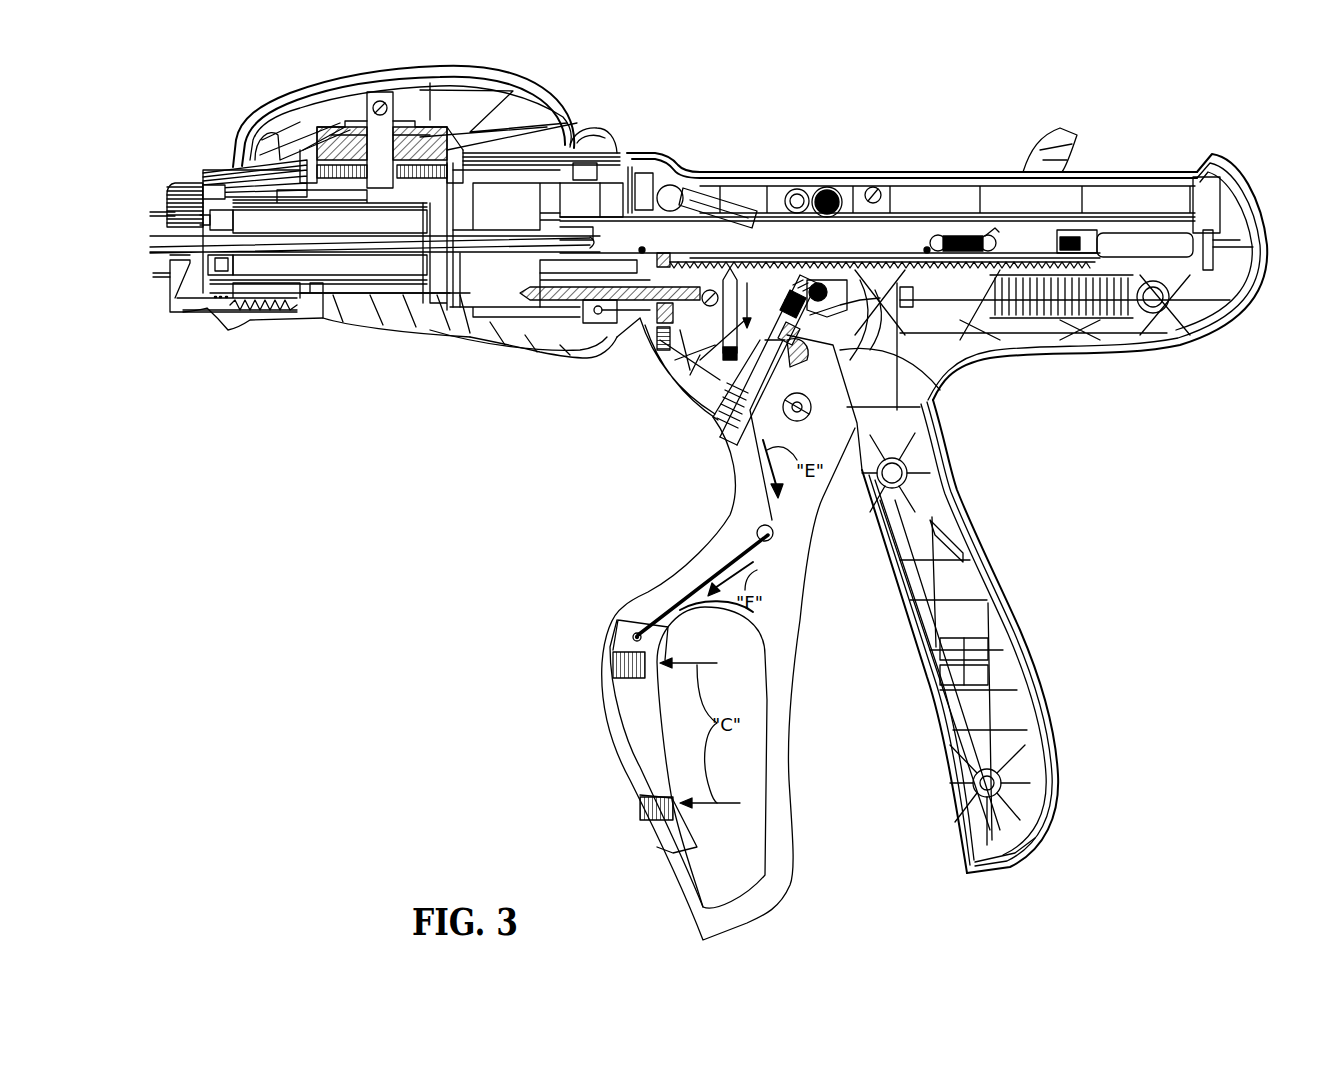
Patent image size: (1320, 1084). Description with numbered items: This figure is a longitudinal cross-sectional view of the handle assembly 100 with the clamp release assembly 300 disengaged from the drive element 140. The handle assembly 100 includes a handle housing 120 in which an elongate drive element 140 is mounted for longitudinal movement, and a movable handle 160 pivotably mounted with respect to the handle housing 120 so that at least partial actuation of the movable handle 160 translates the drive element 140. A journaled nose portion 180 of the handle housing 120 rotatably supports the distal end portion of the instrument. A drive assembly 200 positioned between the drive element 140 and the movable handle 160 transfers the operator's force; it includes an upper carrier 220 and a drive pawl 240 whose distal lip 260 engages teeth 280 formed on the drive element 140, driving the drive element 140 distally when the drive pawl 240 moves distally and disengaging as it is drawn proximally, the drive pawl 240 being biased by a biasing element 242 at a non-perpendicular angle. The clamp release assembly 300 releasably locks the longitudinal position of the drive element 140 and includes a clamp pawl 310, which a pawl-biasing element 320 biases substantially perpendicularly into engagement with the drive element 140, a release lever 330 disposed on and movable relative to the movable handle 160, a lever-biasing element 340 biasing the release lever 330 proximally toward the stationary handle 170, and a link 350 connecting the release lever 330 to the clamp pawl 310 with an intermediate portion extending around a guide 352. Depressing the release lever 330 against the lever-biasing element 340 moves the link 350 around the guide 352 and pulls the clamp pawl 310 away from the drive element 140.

The handle assembly 100 is at (978, 115).
The handle housing 120 is at (1043, 157).
The drive element 140 is at (687, 250).
The movable handle 160 is at (753, 905).
The stationary handle 170 is at (1020, 863).
The journaled nose portion 180 is at (180, 190).
The drive assembly 200 is at (950, 383).
The upper carrier 220 is at (837, 303).
The drive pawl 240 is at (820, 290).
The biasing element 242 is at (740, 417).
The distal lip 260 is at (800, 189).
The teeth 280 is at (950, 367).
The clamp release assembly 300 is at (558, 636).
The clamp pawl 310 is at (680, 353).
The pawl-biasing element 320 is at (717, 370).
The release lever 330 is at (630, 733).
The lever-biasing element 340 is at (613, 663).
The link 350 is at (746, 585).
The guide 352 is at (770, 513).